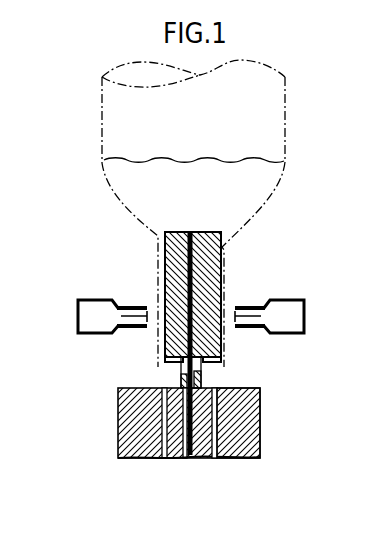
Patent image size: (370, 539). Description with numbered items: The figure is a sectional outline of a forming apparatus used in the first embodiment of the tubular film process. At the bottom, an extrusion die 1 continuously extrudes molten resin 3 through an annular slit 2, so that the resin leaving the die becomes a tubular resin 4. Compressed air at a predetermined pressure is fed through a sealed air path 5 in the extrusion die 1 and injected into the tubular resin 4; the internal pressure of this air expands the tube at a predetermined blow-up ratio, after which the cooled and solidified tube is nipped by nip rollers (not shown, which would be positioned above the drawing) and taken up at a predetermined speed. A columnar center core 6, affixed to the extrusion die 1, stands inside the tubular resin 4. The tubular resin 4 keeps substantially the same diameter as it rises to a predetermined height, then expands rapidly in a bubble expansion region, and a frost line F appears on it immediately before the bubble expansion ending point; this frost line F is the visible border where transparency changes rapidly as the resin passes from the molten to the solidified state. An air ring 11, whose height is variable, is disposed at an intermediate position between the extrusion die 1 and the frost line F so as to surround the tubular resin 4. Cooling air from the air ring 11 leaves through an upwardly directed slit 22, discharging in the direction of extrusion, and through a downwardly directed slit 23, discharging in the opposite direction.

The extrusion die 1 is at (259, 438).
The annular slit 2 is at (228, 393).
The molten resin 3 is at (228, 418).
The tubular resin 4 is at (225, 256).
The sealed air path 5 is at (196, 450).
The columnar center core 6 is at (212, 270).
The air ring 11 is at (87, 299).
The upwardly directed slit 22 is at (145, 305).
The downwardly directed slit 23 is at (145, 329).
The frost line F is at (248, 167).